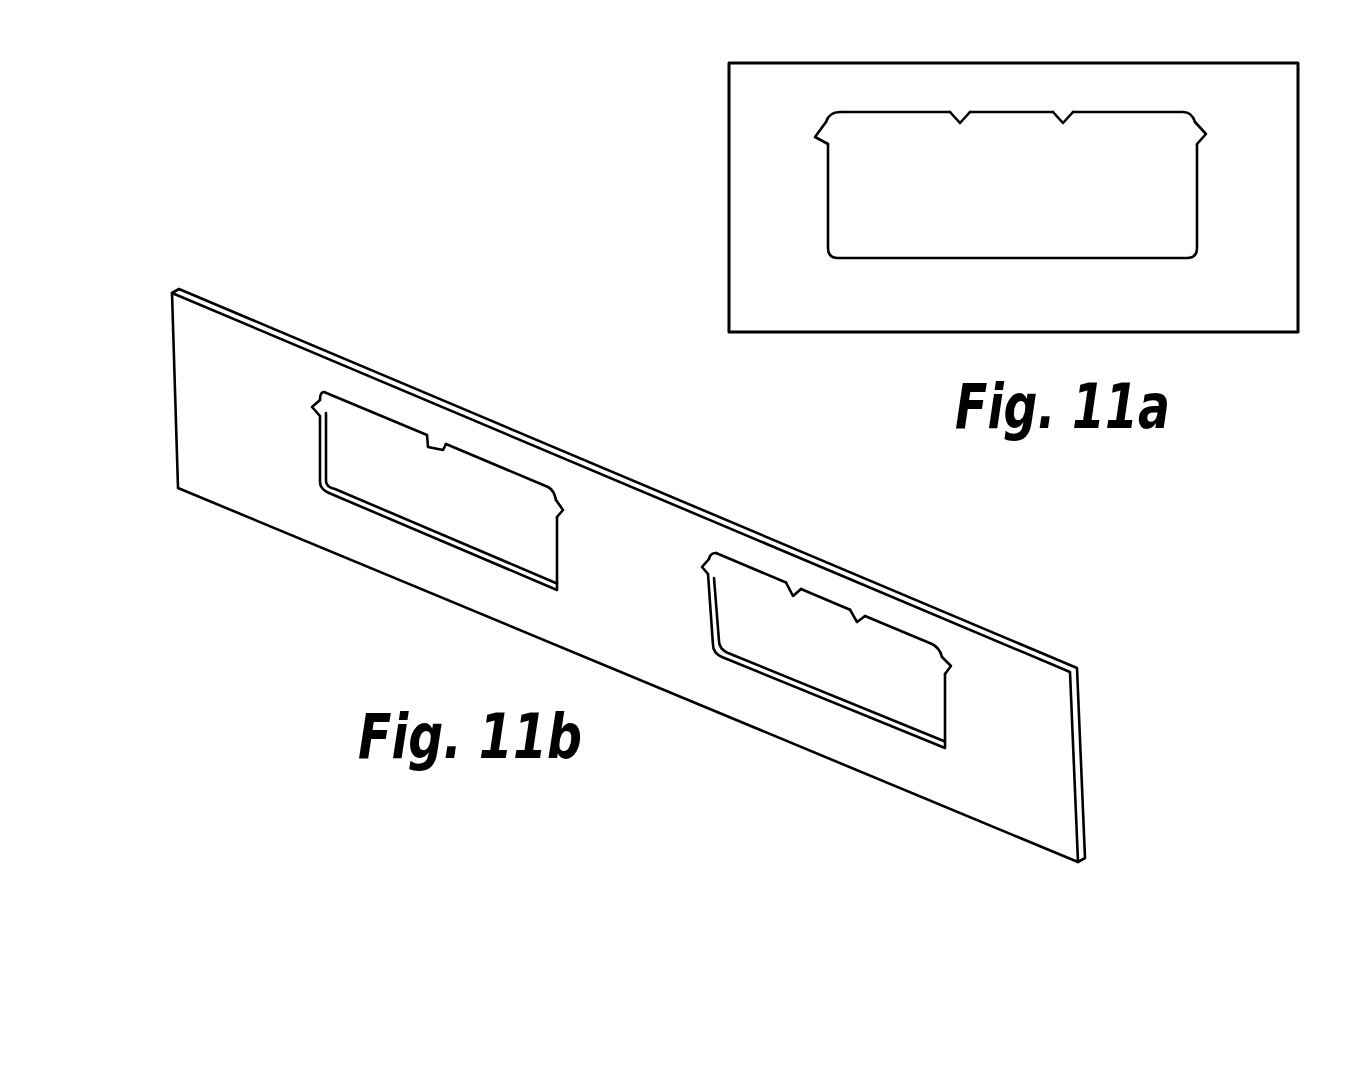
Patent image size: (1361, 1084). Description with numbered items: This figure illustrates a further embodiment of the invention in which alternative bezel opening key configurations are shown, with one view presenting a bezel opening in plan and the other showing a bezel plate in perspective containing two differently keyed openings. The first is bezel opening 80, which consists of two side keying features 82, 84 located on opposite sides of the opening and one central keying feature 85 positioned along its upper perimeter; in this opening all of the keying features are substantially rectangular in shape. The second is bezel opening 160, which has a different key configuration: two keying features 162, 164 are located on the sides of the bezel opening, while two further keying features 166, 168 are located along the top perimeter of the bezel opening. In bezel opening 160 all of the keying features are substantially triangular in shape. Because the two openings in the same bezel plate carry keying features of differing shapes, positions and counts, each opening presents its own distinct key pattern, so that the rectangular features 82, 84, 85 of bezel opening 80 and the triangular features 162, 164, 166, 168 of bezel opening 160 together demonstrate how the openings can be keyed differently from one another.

In FIG. 11b, the bezel opening 80 is at (390, 498).
In FIG. 11b, the side keying feature 82 is at (311, 408).
In FIG. 11b, the side keying feature 84 is at (565, 510).
In FIG. 11b, the central keying feature 85 is at (436, 445).
In FIG. 11a, the bezel opening 160 is at (1063, 215).
In FIG. 11b, the bezel opening 160 is at (840, 692).
In FIG. 11a, the side keying feature 162 is at (817, 139).
In FIG. 11b, the side keying feature 162 is at (702, 567).
In FIG. 11a, the side keying feature 164 is at (1208, 134).
In FIG. 11b, the side keying feature 164 is at (948, 670).
In FIG. 11a, the top keying feature 166 is at (959, 110).
In FIG. 11b, the top keying feature 166 is at (792, 590).
In FIG. 11a, the top keying feature 168 is at (1062, 110).
In FIG. 11b, the top keying feature 168 is at (858, 612).